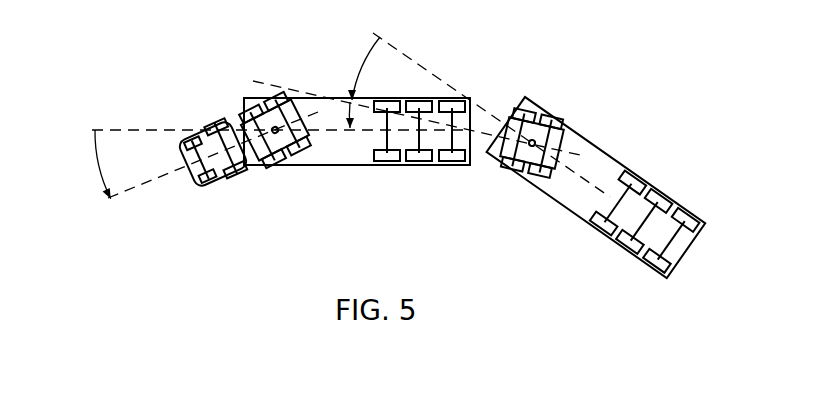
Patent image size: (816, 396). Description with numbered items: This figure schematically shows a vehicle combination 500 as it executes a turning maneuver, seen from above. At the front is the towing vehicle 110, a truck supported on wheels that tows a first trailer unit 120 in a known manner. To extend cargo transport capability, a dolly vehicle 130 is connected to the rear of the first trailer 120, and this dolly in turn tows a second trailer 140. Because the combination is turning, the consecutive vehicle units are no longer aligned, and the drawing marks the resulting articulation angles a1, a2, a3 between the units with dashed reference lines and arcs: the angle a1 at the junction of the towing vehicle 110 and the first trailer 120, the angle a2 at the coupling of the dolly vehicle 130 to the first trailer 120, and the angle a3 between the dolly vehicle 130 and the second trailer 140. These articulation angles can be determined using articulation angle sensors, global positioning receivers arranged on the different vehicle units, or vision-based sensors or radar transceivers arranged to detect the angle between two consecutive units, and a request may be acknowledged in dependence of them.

The vehicle combination 500 is at (150, 55).
The towing vehicle 110 is at (243, 180).
The first trailer unit 120 is at (352, 168).
The dolly vehicle 130 is at (497, 158).
The second trailer 140 is at (658, 190).
The articulation angle a1 is at (266, 155).
The articulation angle a2 is at (416, 118).
The articulation angle a3 is at (469, 115).